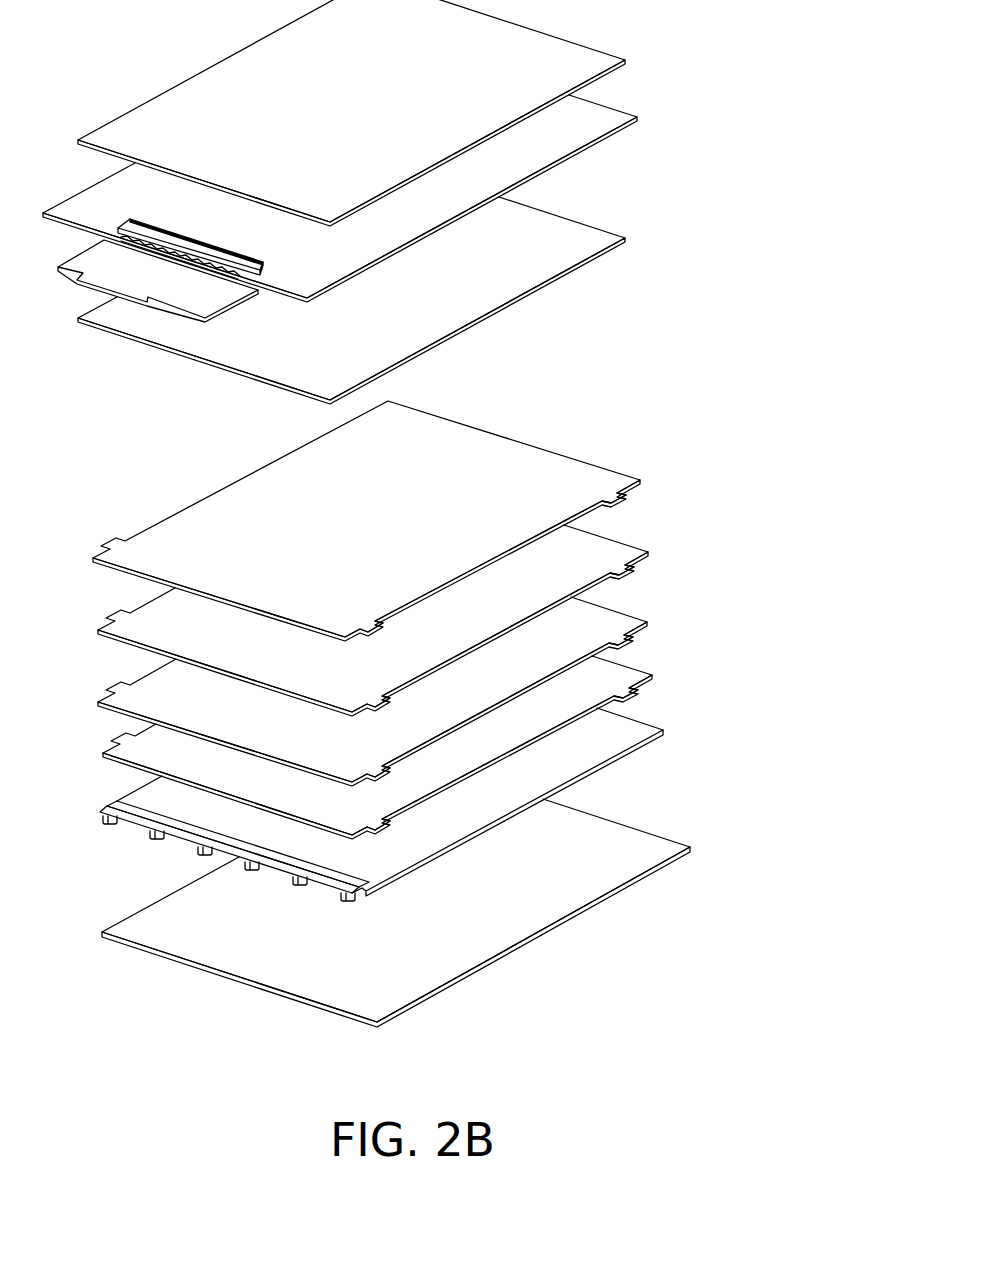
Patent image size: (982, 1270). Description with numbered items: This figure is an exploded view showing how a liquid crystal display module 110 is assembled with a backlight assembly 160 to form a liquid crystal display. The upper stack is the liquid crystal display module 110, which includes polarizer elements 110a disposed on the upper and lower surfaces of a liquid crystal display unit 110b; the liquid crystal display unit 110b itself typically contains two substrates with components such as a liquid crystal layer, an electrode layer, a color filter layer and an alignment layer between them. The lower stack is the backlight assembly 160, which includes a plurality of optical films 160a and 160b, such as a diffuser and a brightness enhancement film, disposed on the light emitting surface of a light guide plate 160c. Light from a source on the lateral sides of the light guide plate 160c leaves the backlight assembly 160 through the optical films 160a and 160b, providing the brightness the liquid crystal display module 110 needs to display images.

The liquid crystal display module 110 is at (412, 202).
The polarizer elements 110a is at (600, 60).
The liquid crystal display unit 110b is at (606, 115).
The backlight assembly 160 is at (465, 714).
The optical film 160a is at (765, 822).
The optical film 160b is at (607, 555).
The light guide plate 160c is at (640, 735).